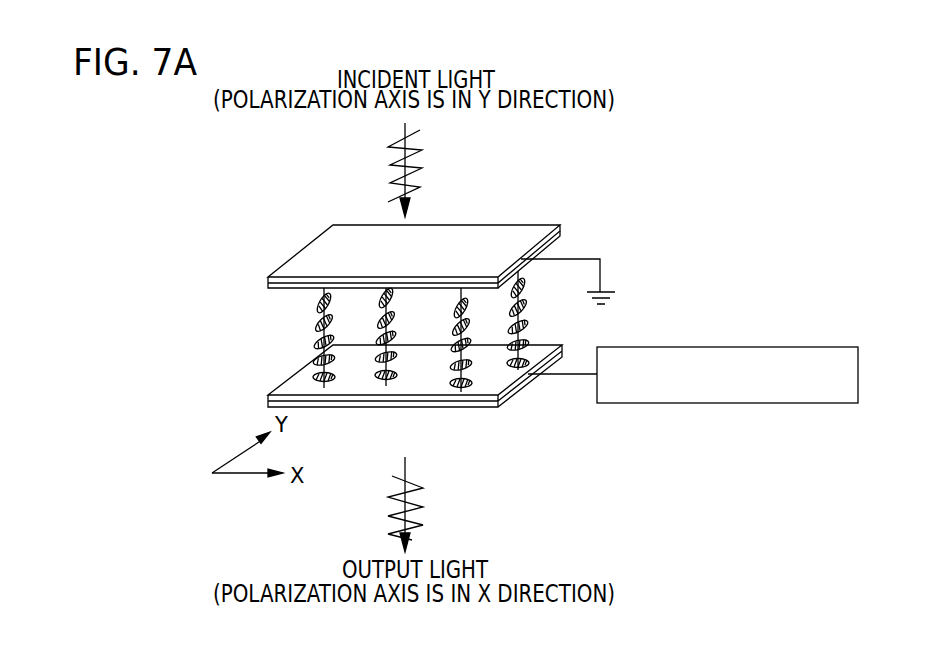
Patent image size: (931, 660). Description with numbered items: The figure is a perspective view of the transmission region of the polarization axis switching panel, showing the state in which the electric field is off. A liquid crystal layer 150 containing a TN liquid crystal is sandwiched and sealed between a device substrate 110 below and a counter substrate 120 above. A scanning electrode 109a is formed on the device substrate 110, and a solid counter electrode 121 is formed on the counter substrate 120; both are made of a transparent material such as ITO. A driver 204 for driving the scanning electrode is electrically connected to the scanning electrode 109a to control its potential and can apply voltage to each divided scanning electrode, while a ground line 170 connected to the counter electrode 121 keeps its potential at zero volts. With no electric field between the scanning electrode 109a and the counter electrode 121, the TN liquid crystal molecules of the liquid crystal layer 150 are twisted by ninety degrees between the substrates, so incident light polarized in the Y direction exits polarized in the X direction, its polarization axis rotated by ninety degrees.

The counter substrate 120 is at (562, 226).
The counter electrode 121 is at (565, 235).
The ground line 170 is at (602, 273).
The liquid crystal layer 150 is at (264, 397).
The device substrate 110 is at (480, 402).
The scanning electrode 109a is at (510, 392).
The driver for driving the scanning electrode 204 is at (725, 403).